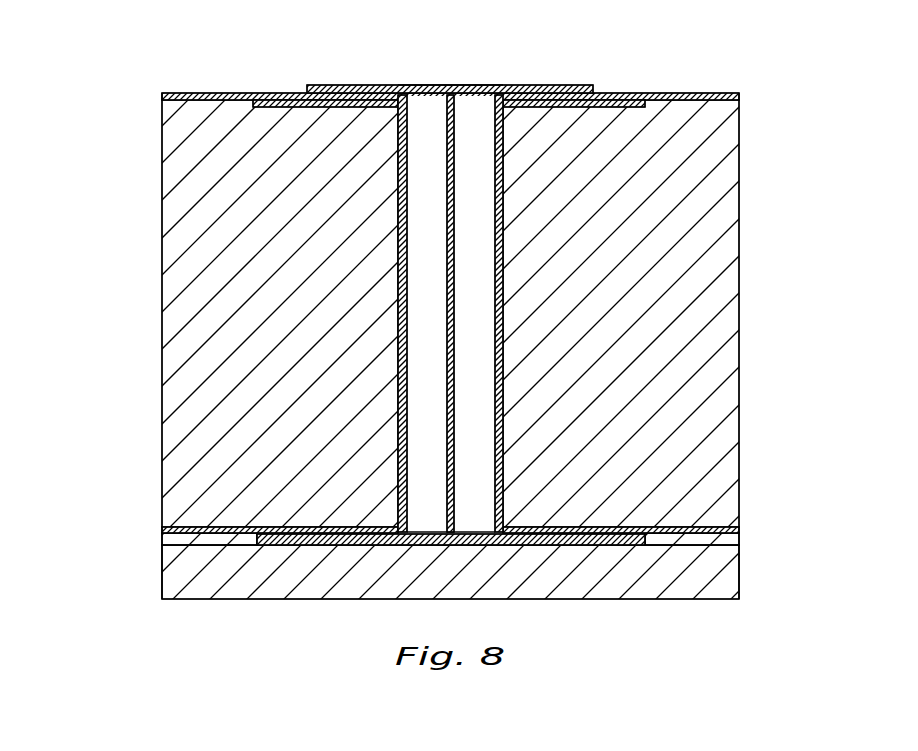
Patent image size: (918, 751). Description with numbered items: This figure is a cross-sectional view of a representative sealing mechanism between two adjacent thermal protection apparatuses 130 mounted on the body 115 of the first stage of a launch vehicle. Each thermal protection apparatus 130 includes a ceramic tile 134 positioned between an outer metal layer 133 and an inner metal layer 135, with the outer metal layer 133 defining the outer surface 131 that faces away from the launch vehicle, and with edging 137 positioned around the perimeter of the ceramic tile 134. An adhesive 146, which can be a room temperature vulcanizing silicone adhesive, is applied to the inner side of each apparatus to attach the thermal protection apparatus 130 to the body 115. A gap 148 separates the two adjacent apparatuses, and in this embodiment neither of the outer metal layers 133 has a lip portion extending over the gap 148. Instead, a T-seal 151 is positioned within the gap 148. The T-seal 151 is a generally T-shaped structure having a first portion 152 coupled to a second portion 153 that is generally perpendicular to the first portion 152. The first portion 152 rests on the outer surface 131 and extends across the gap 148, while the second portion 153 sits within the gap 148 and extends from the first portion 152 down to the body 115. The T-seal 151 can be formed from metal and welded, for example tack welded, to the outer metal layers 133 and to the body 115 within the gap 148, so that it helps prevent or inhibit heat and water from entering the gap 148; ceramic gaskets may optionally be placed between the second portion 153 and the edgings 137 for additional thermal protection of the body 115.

The body 115 is at (737, 572).
The thermal protection apparatus 130 is at (99, 194).
The outer surface 131 is at (205, 81).
The outer metal portion 133 is at (282, 92).
The ceramic tile 134 is at (304, 317).
The inner metal portion 135 is at (165, 528).
The edging 137 is at (398, 395).
The adhesive 146 is at (480, 545).
The gap 148 is at (475, 114).
The T-seal 151 is at (437, 59).
The first portion 152 is at (343, 86).
The second portion 153 is at (447, 215).